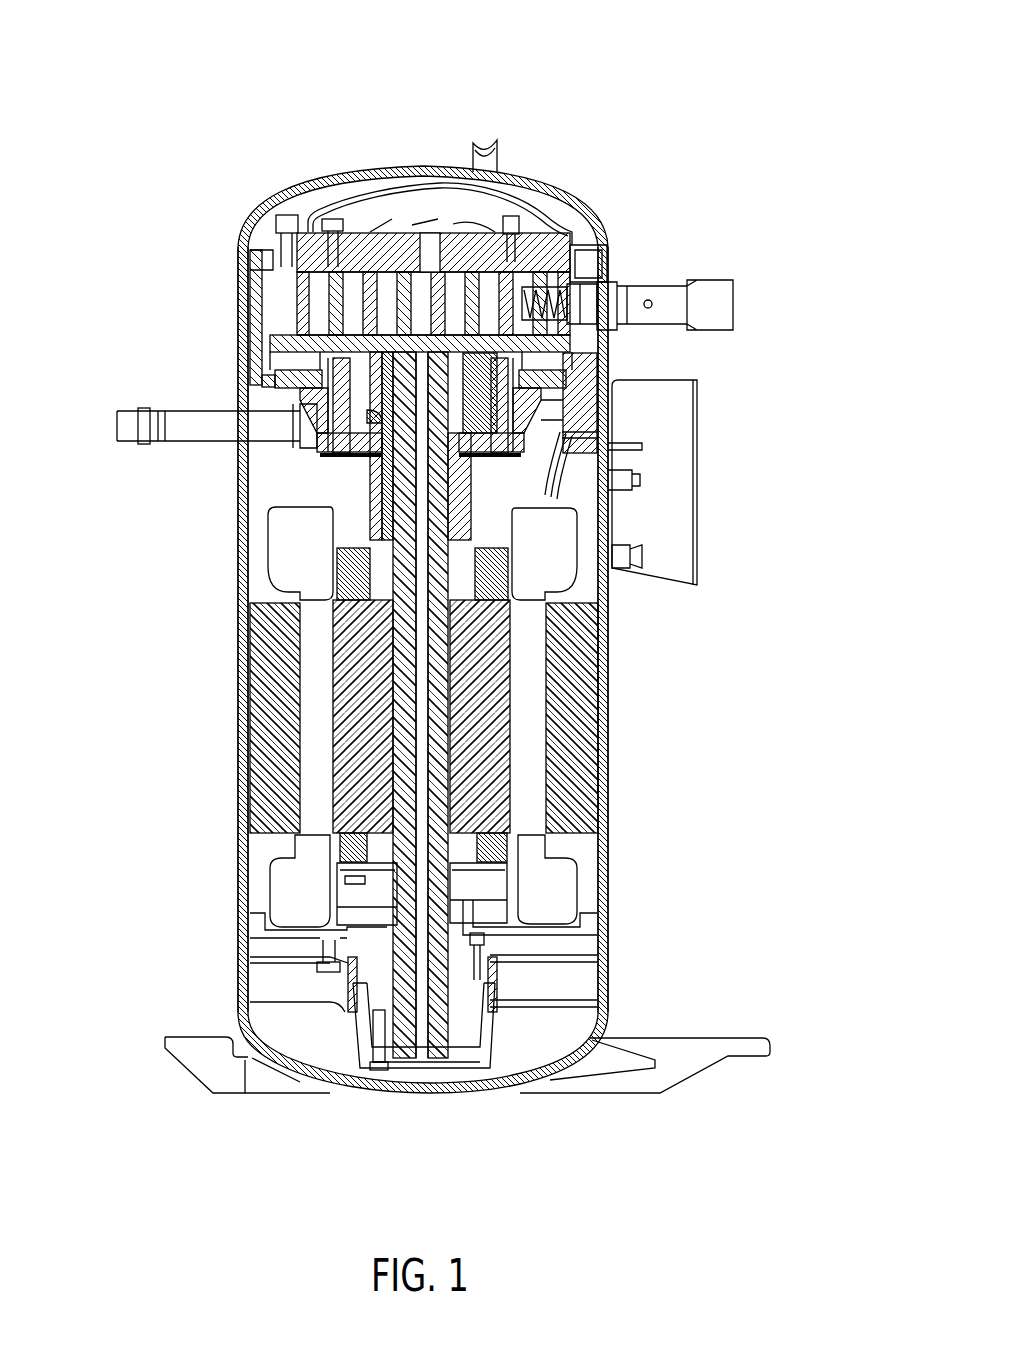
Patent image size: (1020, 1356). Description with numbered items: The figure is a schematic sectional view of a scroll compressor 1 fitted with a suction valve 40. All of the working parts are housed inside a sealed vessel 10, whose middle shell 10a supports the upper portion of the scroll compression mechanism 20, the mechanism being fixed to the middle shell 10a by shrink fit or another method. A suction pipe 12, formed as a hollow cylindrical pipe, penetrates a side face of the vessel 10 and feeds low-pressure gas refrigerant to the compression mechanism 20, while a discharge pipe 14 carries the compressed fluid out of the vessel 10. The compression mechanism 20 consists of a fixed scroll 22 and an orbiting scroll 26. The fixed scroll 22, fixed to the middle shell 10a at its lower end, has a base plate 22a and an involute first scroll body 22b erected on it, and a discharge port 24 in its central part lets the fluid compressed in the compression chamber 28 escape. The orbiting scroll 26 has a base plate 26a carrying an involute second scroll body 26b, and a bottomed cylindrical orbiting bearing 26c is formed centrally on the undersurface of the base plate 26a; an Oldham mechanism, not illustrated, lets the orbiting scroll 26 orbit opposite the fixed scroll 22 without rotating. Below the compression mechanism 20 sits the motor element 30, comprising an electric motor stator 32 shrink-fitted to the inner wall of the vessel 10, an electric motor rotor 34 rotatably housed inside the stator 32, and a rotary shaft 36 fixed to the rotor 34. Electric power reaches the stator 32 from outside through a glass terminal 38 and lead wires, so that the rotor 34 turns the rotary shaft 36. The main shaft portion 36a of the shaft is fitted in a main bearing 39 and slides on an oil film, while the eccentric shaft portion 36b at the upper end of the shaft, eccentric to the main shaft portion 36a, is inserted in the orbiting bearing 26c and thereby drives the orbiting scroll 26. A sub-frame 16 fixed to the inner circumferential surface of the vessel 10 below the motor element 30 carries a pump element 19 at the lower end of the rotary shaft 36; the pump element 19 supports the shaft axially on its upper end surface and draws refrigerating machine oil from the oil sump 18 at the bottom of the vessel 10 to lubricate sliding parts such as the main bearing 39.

The compressor 1 is at (665, 141).
The vessel 10 is at (545, 172).
The middle shell 10a is at (240, 700).
The suction pipe 12 is at (713, 305).
The discharge pipe 14 is at (120, 430).
The sub-frame 16 is at (588, 936).
The oil sump 18 is at (297, 1047).
The pump element 19 is at (488, 1036).
The scroll compression mechanism 20 is at (265, 243).
The fixed scroll 22 is at (420, 215).
The base plate 22a is at (288, 212).
The first scroll body 22b is at (340, 272).
The discharge port 24 is at (427, 253).
The orbiting scroll 26 is at (322, 401).
The base plate 26a is at (262, 325).
The second scroll body 26b is at (260, 290).
The orbiting bearing 26c is at (262, 362).
The compression chamber 28 is at (390, 297).
The motor element 30 is at (491, 705).
The electric motor stator 32 is at (598, 660).
The electric motor rotor 34 is at (487, 728).
The rotary shaft 36 is at (687, 510).
The main shaft portion 36a is at (606, 588).
The eccentric shaft portion 36b is at (600, 492).
The glass terminal 38 is at (627, 433).
The main bearing 39 is at (370, 512).
The suction valve 40 is at (592, 244).